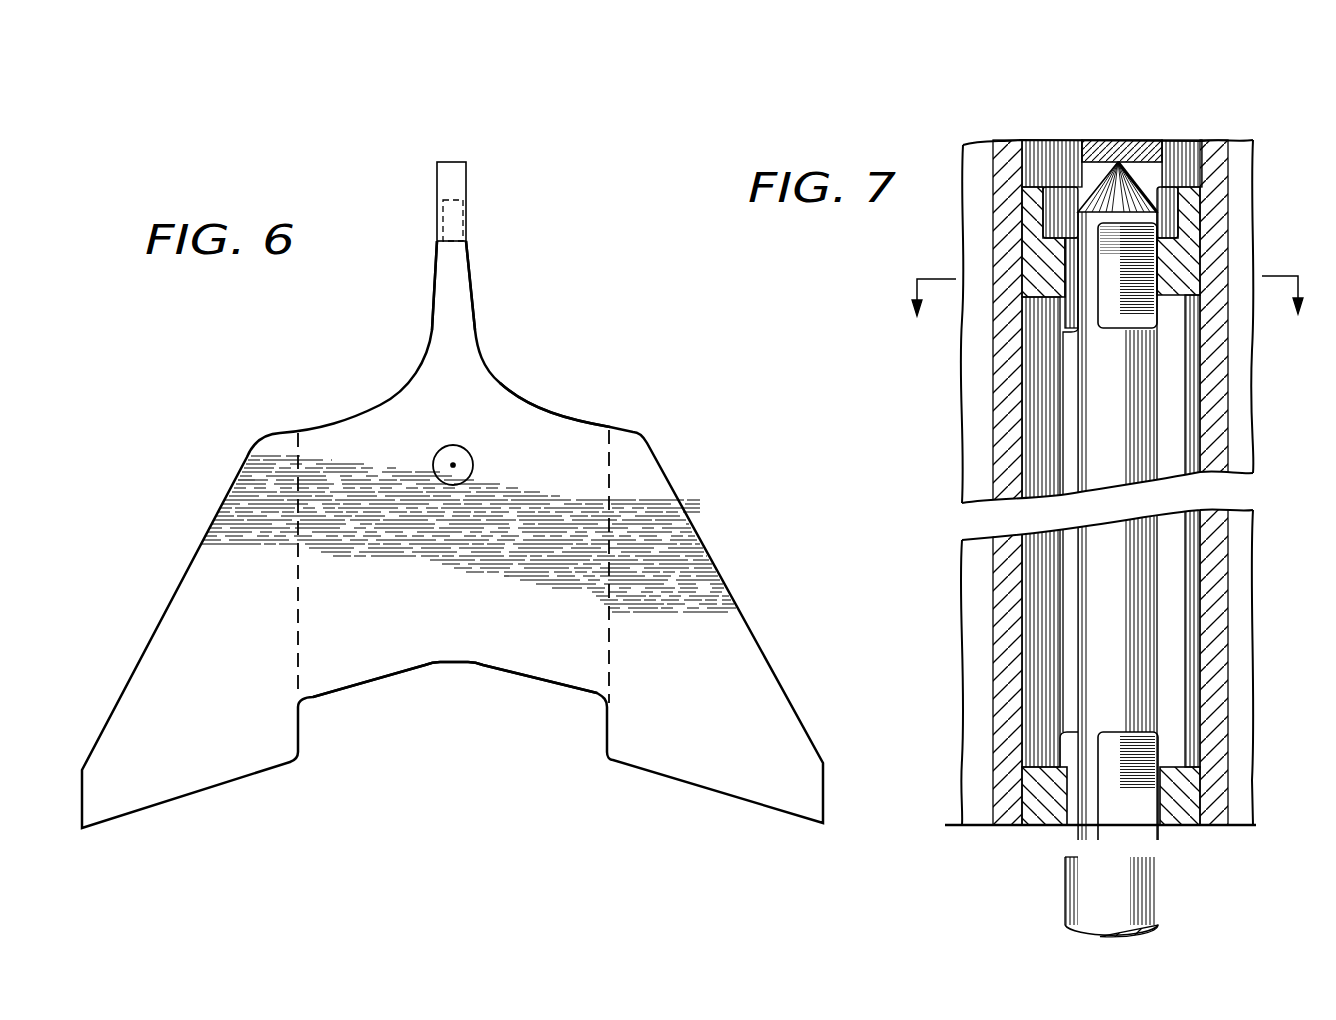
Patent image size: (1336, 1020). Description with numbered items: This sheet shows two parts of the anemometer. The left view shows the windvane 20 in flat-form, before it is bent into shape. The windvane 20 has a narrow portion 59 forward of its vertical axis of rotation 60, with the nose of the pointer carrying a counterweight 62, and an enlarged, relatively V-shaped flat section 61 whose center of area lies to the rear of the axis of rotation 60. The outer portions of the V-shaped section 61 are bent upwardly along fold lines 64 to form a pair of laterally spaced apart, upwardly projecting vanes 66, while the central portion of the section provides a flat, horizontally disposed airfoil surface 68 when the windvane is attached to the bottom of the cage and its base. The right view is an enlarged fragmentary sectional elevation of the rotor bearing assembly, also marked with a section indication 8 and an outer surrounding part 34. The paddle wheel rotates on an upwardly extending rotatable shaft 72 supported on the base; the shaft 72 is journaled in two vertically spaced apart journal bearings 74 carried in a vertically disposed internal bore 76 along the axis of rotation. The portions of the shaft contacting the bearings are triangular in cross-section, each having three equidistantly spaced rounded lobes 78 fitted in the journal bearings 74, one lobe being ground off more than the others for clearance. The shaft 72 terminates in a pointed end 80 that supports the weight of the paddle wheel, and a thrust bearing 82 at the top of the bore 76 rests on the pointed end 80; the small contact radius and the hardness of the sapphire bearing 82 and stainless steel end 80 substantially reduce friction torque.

In FIG. 6, the windvane 20 is at (642, 430).
In FIG. 6, the narrow portion 59 is at (460, 284).
In FIG. 6, the vertical axis of rotation 60 is at (455, 464).
In FIG. 6, the V-shaped flat section 61 is at (521, 618).
In FIG. 6, the counterweight 62 is at (458, 196).
In FIG. 6, the fold lines 64 is at (298, 605).
In FIG. 6, the vanes 66 is at (230, 740).
In FIG. 6, the airfoil surface 68 is at (549, 427).
In FIG. 7, the section line 8- 8 is at (1107, 308).
In FIG. 7, the outer tube 34 is at (1245, 553).
In FIG. 7, the rotatable shaft 72 is at (1068, 880).
In FIG. 7, the journal bearings 74 is at (1046, 299).
In FIG. 7, the internal bore 76 is at (1024, 377).
In FIG. 7, the rounded lobes 78 is at (1086, 300).
In FIG. 7, the pointed end 80 is at (1043, 215).
In FIG. 7, the thrust bearing 82 is at (1127, 138).